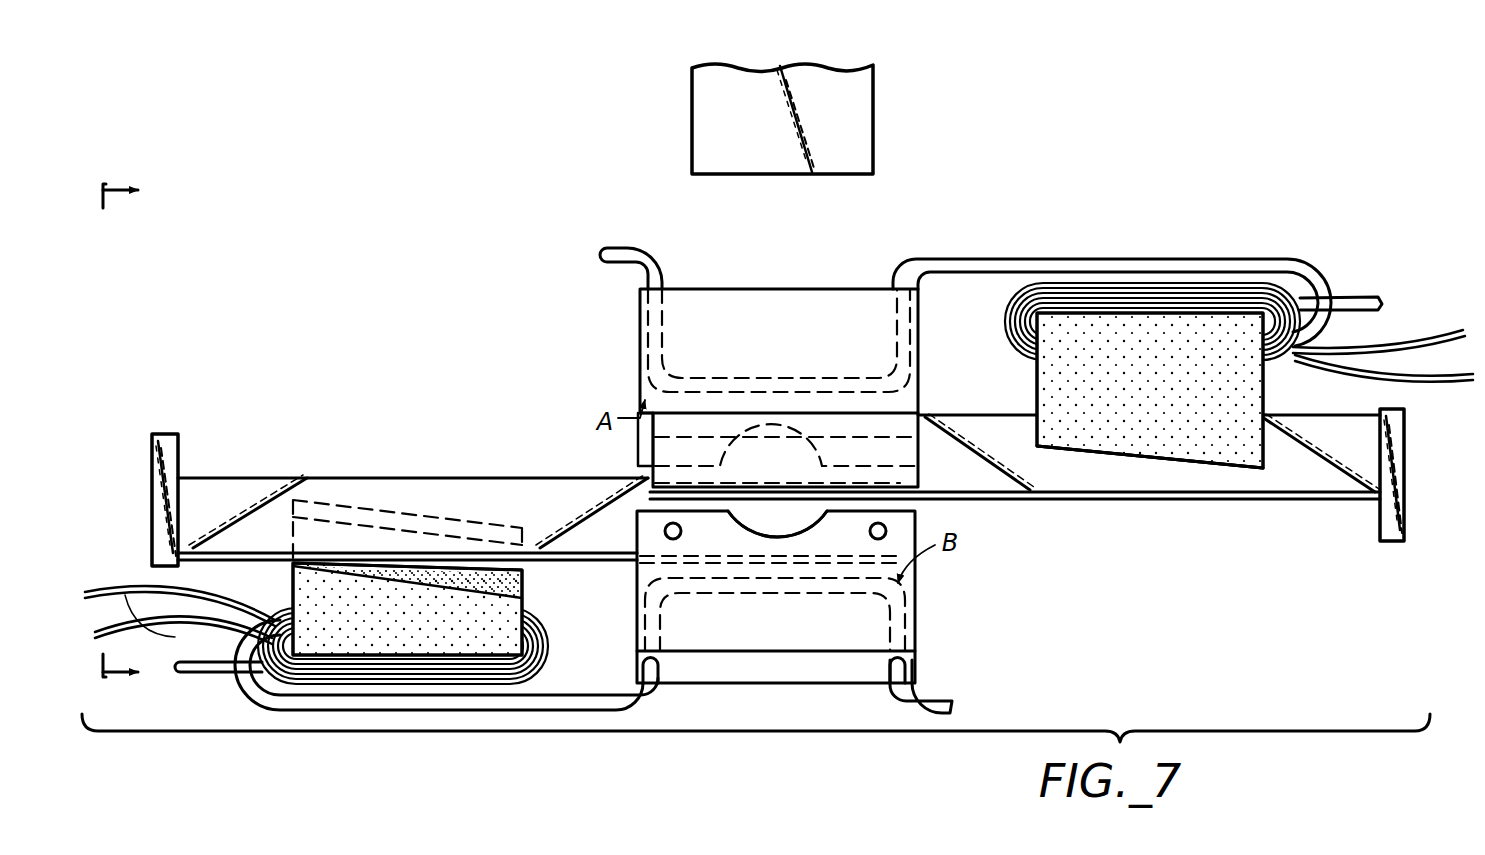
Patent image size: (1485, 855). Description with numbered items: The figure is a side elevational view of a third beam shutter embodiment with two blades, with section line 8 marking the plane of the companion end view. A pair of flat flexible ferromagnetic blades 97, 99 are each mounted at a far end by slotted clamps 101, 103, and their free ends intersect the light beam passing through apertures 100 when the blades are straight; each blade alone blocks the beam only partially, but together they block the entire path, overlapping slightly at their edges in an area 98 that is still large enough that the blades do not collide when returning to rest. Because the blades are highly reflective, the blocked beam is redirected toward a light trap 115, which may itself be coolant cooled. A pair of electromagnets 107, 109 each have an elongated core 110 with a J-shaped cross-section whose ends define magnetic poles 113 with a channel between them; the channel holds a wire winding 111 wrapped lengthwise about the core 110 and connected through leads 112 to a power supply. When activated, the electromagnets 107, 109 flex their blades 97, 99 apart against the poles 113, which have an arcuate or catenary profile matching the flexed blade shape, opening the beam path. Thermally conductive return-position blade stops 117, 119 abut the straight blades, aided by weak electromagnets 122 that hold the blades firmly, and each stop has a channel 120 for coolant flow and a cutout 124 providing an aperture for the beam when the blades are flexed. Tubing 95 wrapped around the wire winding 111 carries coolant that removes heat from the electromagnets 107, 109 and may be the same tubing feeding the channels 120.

The section line 8- 8 is at (138, 432).
The tubing 95 is at (246, 690).
The blade 97 is at (988, 482).
The overlap area 98 is at (718, 487).
The blade 99 is at (520, 478).
The aperture 100 is at (828, 460).
The slotted clamp 101 is at (1388, 523).
The slotted clamp 103 is at (170, 456).
The electromagnet 107 is at (1022, 372).
The electromagnet 109 is at (545, 604).
The core 110 is at (300, 588).
The wire winding 111 is at (545, 663).
The leads 112 is at (175, 615).
The magnetic poles 113 is at (500, 525).
The light trap 115 is at (858, 121).
The blade stop 117 is at (782, 289).
The blade stop 119 is at (822, 672).
The channel 120 is at (785, 375).
The weak electromagnet 122 is at (680, 533).
The cutout 124 is at (800, 530).